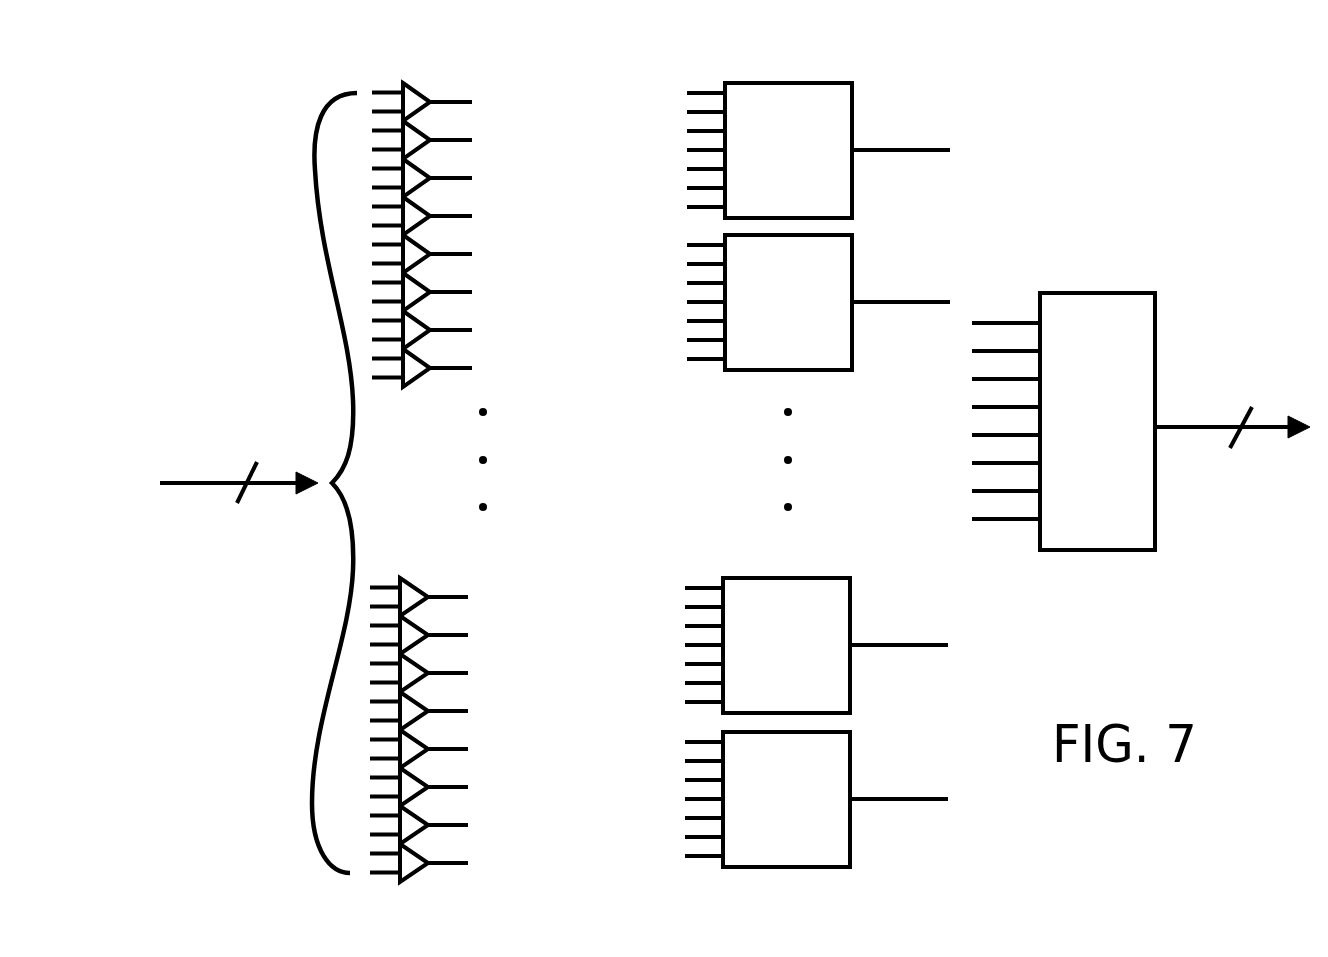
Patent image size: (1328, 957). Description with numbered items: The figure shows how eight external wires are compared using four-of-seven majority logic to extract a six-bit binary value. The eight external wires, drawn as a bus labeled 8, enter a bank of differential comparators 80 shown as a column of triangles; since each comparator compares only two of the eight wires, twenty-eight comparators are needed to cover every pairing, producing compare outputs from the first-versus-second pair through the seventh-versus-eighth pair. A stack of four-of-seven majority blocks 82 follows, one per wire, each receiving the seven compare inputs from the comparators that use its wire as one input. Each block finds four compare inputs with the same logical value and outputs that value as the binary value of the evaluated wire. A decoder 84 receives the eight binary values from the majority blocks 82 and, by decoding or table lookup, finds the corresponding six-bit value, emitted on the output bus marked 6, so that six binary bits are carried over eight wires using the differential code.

The 8-bit input bus (4x2) 8 is at (239, 457).
The differential comparators 80 is at (419, 562).
The 4/7 majority block 82 is at (845, 203).
The decoder 84 is at (1137, 527).
The 6-bit output bus 6 is at (1232, 406).